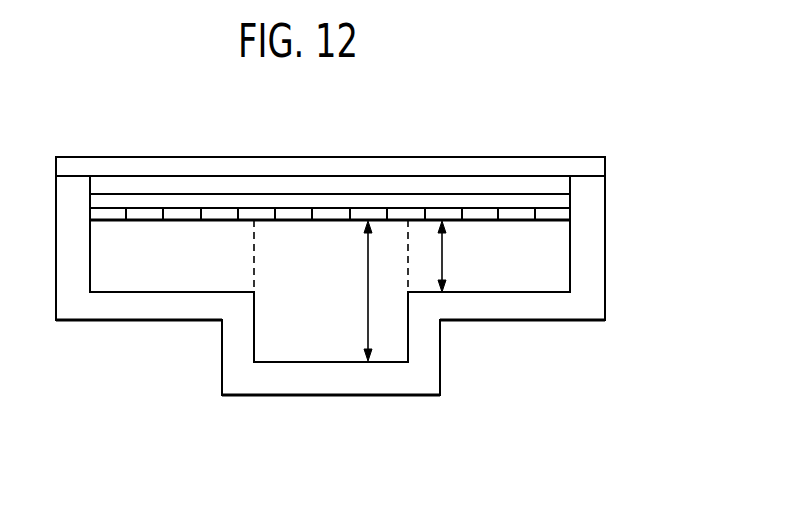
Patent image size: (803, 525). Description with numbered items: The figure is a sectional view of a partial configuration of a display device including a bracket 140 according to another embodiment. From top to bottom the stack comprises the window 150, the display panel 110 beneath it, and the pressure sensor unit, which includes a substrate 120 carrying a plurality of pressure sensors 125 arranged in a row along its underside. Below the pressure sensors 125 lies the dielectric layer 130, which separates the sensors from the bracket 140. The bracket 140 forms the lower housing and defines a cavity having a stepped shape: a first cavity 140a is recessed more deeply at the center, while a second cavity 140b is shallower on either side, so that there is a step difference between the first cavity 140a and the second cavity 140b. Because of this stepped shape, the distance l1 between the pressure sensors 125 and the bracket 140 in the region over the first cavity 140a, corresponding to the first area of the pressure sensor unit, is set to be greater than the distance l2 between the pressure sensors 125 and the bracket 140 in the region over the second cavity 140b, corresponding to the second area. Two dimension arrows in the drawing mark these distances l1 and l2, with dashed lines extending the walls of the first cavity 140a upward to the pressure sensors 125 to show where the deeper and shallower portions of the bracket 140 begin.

The display panel 110 is at (563, 184).
The substrate 120 is at (563, 198).
The pressure sensors 125 is at (550, 218).
The dielectric layer 130 is at (558, 285).
The bracket 140 is at (592, 308).
The first cavity 140a is at (309, 342).
The second cavity 140b is at (185, 255).
The window 150 is at (600, 168).
The distance l1 is at (359, 291).
The distance l2 is at (450, 256).